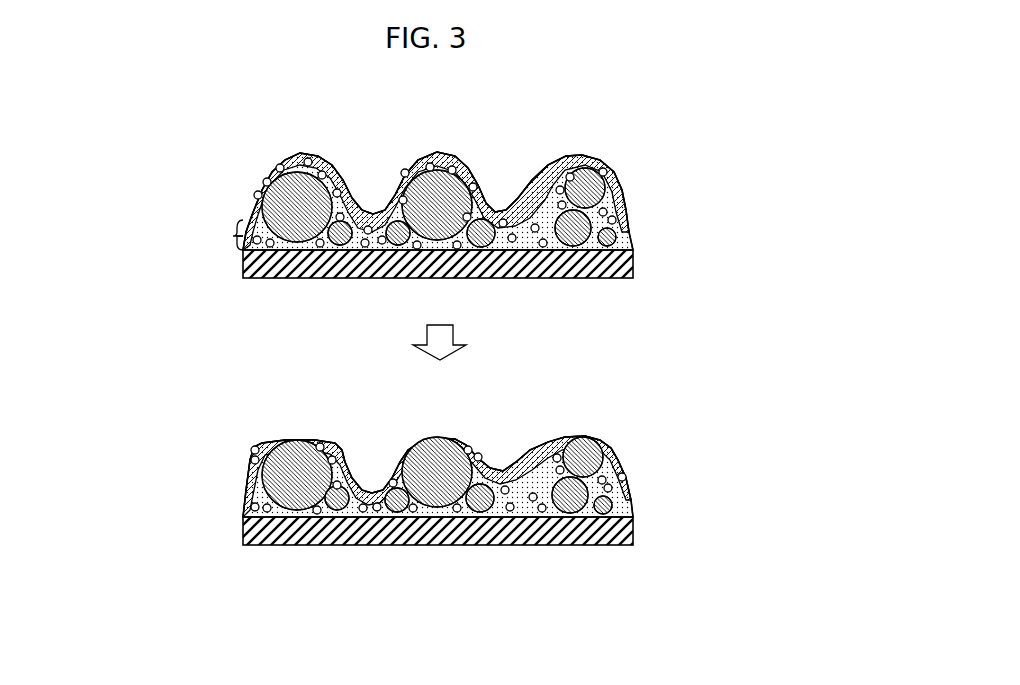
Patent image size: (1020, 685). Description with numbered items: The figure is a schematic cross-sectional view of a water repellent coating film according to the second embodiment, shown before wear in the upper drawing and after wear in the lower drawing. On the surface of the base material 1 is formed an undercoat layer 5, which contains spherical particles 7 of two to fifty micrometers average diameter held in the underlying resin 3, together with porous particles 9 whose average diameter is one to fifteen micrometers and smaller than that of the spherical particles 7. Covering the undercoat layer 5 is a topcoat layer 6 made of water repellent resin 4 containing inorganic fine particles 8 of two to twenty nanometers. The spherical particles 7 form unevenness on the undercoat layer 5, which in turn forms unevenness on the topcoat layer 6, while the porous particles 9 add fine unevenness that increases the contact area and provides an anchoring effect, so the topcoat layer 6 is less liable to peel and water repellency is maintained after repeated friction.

The base material 1 is at (633, 265).
The underlying resin 3 is at (630, 232).
The water repellent resin 4 is at (492, 190).
The undercoat layer 5 is at (240, 249).
The topcoat layer 6 is at (233, 235).
The spherical particles 7 is at (605, 178).
The inorganic fine particles 8 is at (593, 155).
The porous particles 9 is at (330, 160).